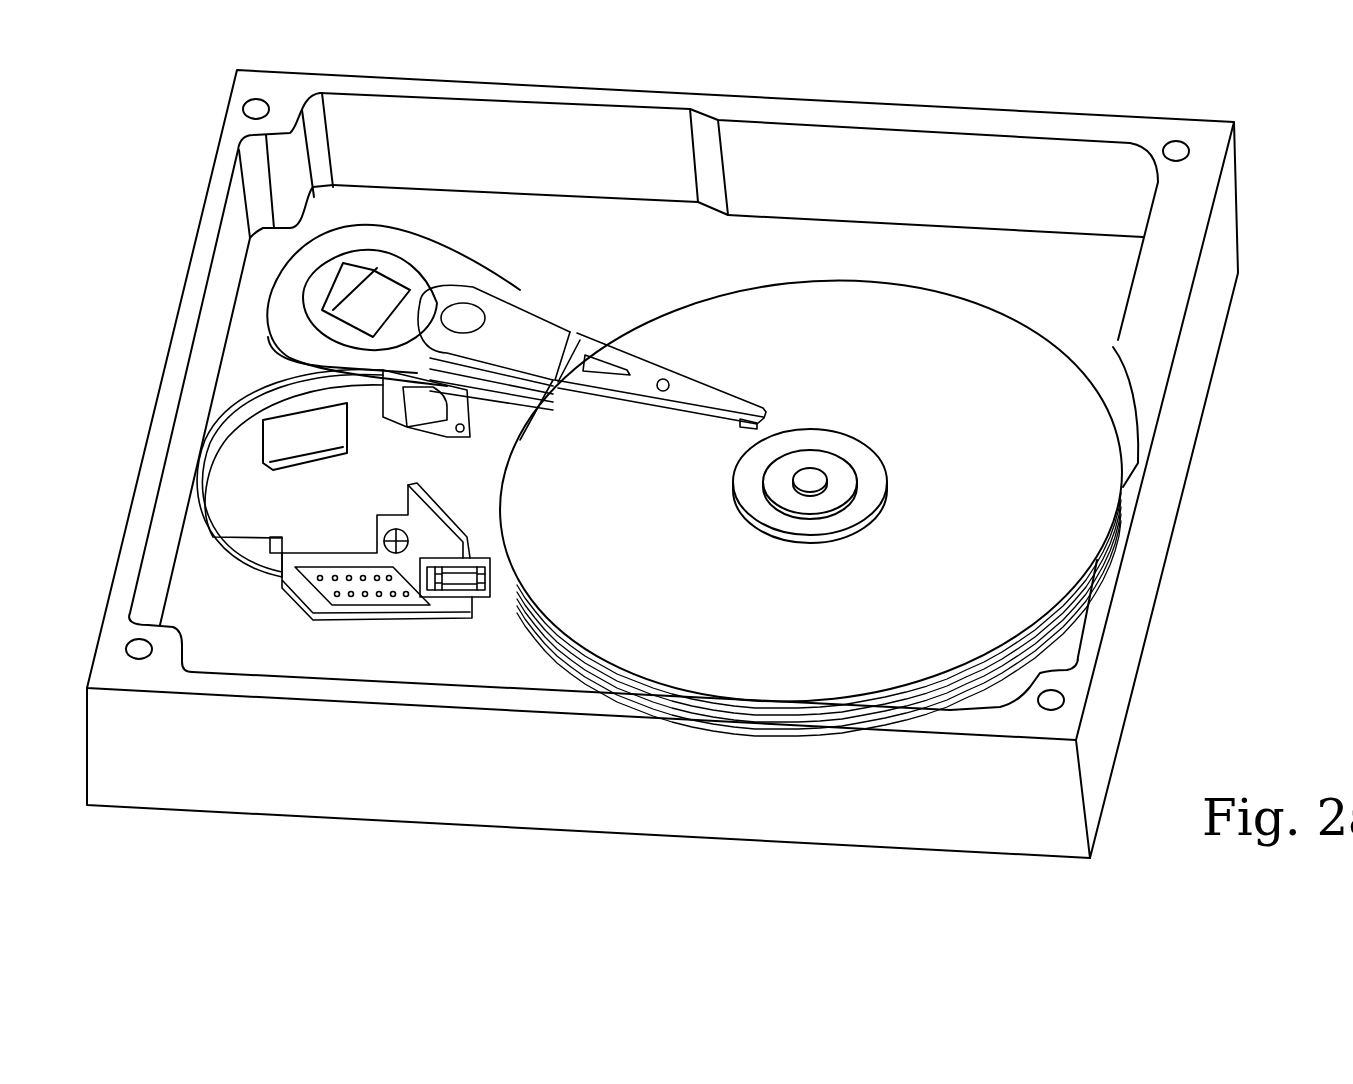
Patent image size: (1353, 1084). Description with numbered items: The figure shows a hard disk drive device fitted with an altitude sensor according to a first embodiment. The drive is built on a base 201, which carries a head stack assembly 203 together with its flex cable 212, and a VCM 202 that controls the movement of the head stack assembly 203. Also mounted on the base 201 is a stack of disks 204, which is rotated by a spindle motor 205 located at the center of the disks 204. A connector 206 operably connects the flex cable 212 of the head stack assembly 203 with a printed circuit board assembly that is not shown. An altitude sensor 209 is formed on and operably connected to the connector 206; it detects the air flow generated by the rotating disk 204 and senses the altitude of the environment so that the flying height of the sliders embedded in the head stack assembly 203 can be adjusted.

The base 201 is at (524, 785).
The VCM 202 is at (300, 293).
The head stack assembly 203 is at (450, 270).
The stack of disks 204 is at (985, 390).
The spindle motor 205 is at (857, 487).
The connector 206 is at (357, 583).
The altitude sensor 209 is at (459, 585).
The flex cable 212 is at (217, 548).